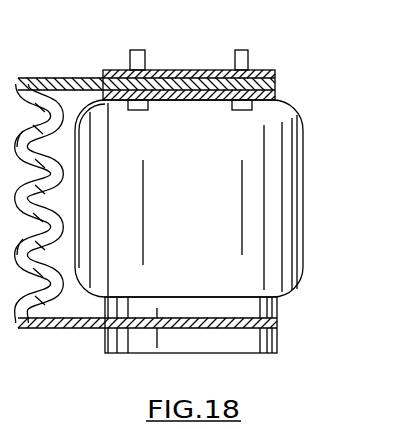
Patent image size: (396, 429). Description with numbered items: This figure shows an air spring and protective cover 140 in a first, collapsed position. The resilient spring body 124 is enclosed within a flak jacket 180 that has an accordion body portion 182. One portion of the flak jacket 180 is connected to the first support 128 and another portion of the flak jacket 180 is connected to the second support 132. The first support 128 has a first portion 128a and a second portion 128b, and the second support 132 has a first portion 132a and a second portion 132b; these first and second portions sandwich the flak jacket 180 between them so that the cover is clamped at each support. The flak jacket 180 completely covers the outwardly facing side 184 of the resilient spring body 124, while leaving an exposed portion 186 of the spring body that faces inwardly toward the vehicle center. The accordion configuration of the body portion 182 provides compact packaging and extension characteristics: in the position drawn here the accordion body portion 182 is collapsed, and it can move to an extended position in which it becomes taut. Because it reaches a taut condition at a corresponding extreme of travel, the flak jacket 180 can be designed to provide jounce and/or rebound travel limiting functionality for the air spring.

The gas spring assembly 140 is at (198, 204).
The first support 128 is at (154, 79).
The first portion of first support 128a is at (223, 68).
The second portion of first support 128b is at (214, 102).
The second support 132 is at (157, 326).
The first portion of second support 132a is at (219, 344).
The second portion of second support 132b is at (213, 307).
The resilient spring body 124 is at (221, 232).
The exposed portion 186 is at (307, 230).
The flak jacket 180 is at (87, 174).
The accordion body portion 182 is at (40, 198).
The outwardly facing side 184 is at (70, 230).